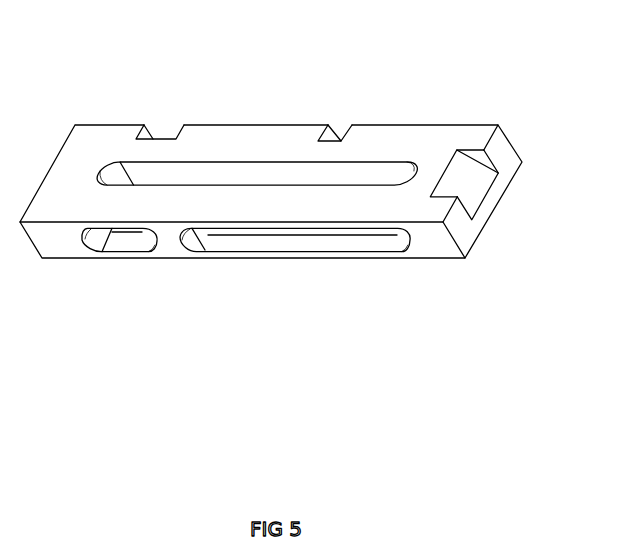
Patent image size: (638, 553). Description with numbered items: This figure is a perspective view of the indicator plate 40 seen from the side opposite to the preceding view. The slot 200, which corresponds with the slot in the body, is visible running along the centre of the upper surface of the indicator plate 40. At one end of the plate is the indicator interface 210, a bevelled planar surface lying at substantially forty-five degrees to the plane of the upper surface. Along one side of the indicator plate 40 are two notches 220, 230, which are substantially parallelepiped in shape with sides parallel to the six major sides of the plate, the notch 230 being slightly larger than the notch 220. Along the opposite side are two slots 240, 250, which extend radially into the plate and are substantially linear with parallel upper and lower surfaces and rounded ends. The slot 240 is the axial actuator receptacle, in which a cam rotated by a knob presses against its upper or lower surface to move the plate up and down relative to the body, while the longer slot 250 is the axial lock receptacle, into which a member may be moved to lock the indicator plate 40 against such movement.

The indicator plate 40 is at (81, 98).
The slot 200 is at (199, 171).
The indicator interface 210 is at (484, 197).
The notch 220 is at (342, 132).
The notch 230 is at (166, 131).
The slot 240 is at (124, 247).
The slot 250 is at (280, 261).